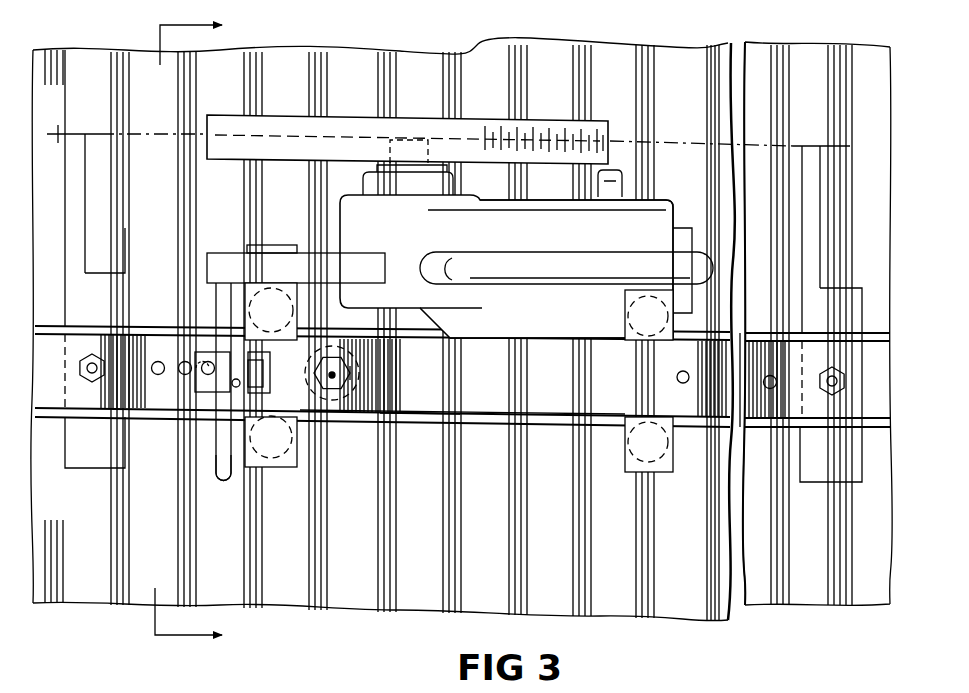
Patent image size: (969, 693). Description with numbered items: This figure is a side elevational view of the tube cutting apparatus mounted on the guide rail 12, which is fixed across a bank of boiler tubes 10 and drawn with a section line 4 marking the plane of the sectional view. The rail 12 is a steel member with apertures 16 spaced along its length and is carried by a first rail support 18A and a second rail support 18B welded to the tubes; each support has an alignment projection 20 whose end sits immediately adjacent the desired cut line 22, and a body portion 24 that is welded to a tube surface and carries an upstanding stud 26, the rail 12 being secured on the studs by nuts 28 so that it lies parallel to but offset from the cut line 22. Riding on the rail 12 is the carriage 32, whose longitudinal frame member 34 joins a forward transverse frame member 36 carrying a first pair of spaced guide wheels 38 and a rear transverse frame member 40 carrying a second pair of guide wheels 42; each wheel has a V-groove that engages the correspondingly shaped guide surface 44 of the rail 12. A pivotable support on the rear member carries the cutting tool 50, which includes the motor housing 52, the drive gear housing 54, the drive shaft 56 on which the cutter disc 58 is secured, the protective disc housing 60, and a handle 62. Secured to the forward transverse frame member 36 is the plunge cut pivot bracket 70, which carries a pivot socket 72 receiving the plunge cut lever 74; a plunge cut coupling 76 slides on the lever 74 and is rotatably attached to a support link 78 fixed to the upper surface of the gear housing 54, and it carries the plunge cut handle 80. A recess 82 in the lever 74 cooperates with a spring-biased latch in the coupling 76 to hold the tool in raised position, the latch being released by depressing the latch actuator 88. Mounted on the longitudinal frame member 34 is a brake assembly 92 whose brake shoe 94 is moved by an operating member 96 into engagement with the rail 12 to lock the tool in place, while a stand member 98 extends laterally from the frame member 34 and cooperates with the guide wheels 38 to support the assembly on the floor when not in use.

The section line 4- 4 is at (205, 335).
The bank of boiler tubes 10 is at (148, 607).
The guide rail 12 is at (86, 326).
The apertures 16 is at (156, 362).
The first rail support 18A is at (86, 472).
The second rail support 18B is at (815, 486).
The alignment projection 20 is at (85, 192).
The cut line 22 is at (107, 133).
The body portion 24 is at (116, 275).
The stud 26 is at (84, 364).
The nuts 28 is at (88, 378).
The carriage 32 is at (416, 410).
The longitudinal frame member 34 is at (465, 386).
The forward transverse frame member 36 is at (289, 470).
The first pair of guide wheels 38 is at (296, 302).
The rear transverse frame member 40 is at (666, 473).
The second pair of guide wheels 42 is at (628, 308).
The guide surface 44 is at (818, 335).
The cutting tool 50 is at (672, 196).
The motor housing 52 is at (380, 210).
The drive gear housing 54 is at (555, 244).
The drive shaft 56 is at (411, 165).
The cutter disc 58 is at (336, 128).
The protective disc housing 60 is at (480, 120).
The handle 62 is at (636, 262).
The plunge cut pivot bracket 70 is at (320, 358).
The pivot socket 72 is at (270, 389).
The plunge cut lever 74 is at (184, 362).
The plunge cut coupling 76 is at (212, 386).
The support link 78 is at (216, 307).
The plunge cut handle 80 is at (228, 482).
The recess 82 is at (210, 362).
The latch actuator 88 is at (235, 388).
The brake assembly 92 is at (338, 382).
The brake shoe 94 is at (352, 351).
The operating member 96 is at (360, 377).
The stand member 98 is at (612, 198).